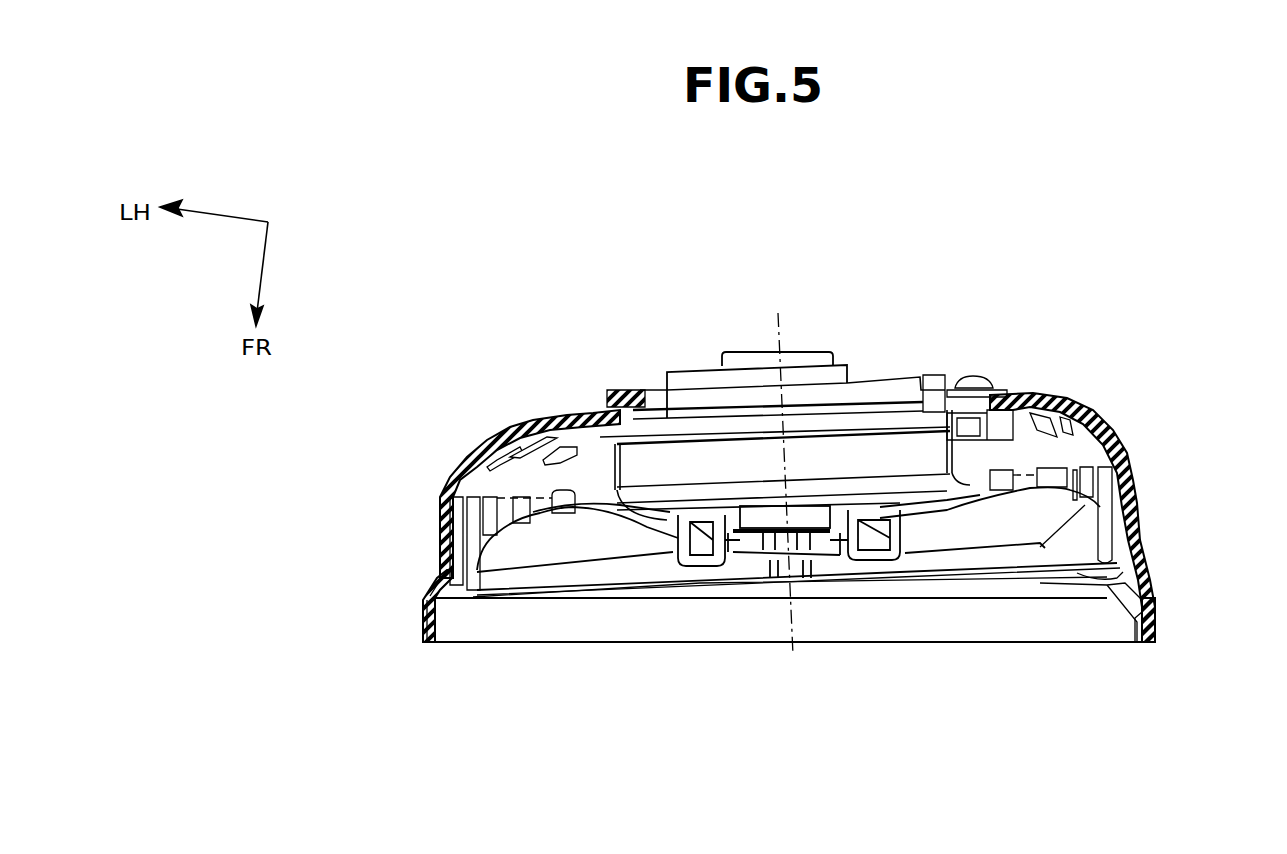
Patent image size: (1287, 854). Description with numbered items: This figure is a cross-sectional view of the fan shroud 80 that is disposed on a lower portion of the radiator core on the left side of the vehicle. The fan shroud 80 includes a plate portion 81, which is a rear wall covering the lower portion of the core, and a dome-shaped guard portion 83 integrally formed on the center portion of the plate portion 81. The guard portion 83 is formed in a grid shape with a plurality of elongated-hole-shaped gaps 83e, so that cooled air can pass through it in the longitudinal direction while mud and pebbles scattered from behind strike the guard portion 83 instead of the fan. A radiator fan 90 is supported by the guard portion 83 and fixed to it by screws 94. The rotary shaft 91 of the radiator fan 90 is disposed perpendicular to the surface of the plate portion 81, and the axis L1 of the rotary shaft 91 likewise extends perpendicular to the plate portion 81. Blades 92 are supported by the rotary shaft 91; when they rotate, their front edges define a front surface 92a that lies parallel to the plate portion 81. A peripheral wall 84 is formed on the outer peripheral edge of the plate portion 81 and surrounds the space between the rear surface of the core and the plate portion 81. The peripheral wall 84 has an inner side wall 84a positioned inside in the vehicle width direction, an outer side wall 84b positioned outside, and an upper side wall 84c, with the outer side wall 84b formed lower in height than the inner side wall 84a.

The fan shroud 80 is at (483, 385).
The plate portion 81 is at (983, 590).
The guard portion 83 is at (560, 423).
The gaps 83e is at (1123, 473).
The peripheral wall 84 is at (1172, 634).
The inner side wall 84a is at (1150, 588).
The outer side wall 84b is at (423, 620).
The upper side wall 84c is at (907, 622).
The radiator fan 90 is at (812, 375).
The rotary shaft 91 is at (785, 540).
The blades 92 is at (567, 507).
The front surface 92a is at (1123, 572).
The screws 94 is at (973, 372).
The axis L1 is at (778, 313).